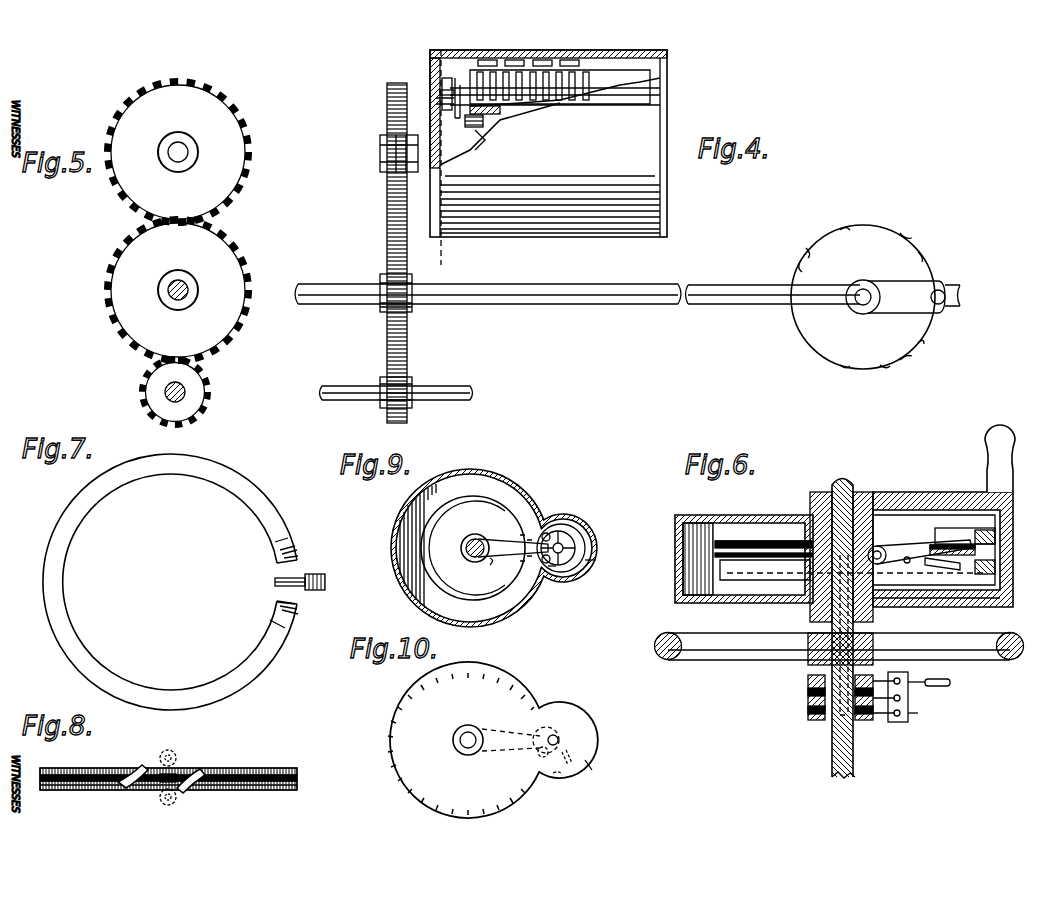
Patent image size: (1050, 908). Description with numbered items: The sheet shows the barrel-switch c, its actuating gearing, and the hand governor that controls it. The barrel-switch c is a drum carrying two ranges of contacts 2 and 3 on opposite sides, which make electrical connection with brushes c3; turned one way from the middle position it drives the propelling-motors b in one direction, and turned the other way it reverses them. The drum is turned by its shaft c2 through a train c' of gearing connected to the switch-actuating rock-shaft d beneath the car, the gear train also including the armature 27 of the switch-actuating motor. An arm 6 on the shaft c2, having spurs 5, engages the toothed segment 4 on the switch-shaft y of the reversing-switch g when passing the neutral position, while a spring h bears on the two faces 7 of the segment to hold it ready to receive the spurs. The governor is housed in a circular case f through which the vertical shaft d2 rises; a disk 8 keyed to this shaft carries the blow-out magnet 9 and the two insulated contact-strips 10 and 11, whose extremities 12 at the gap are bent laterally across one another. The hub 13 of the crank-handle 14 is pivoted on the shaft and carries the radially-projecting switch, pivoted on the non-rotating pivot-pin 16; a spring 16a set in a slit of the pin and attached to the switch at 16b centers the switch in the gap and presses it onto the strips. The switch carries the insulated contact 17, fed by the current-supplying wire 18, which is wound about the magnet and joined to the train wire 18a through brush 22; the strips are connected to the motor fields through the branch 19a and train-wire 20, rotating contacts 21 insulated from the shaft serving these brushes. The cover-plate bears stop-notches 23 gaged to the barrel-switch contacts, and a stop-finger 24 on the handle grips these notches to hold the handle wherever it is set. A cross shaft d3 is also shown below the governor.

In FIG. 4, the range of contacts 2 is at (436, 49).
In FIG. 9, the range of contacts 2 is at (473, 539).
In FIG. 9, the range of contacts 3 is at (496, 575).
In FIG. 4, the toothed segment 4 is at (440, 86).
In FIG. 9, the toothed segment 4 is at (553, 572).
In FIG. 10, the toothed segment 4 is at (538, 753).
In FIG. 9, the spurs 5 is at (514, 545).
In FIG. 9, the arm 6 is at (489, 571).
In FIG. 9, the faces 7 is at (560, 535).
In FIG. 10, the faces 7 is at (548, 740).
In FIG. 6, the disk 8 is at (1002, 598).
In FIG. 7, the blow-out magnet 9 is at (328, 582).
In FIG. 6, the blow-out magnet 9 is at (996, 567).
In FIG. 7, the contact-strip 10 is at (248, 668).
In FIG. 8, the contact-strip 10 is at (255, 768).
In FIG. 6, the contact-strip 10 is at (763, 532).
In FIG. 8, the contact-strip 11 is at (252, 790).
In FIG. 6, the contact-strip 11 is at (850, 566).
In FIG. 7, the extremity of strip 12 is at (296, 551).
In FIG. 8, the extremity of strip 12 is at (142, 765).
In FIG. 6, the hub 13 is at (813, 505).
In FIG. 4, the crank-handle 14 is at (898, 290).
In FIG. 6, the crank-handle 14 is at (910, 500).
In FIG. 6, the pivot-pin 16 is at (880, 552).
In FIG. 6, the spring 16a is at (940, 536).
In FIG. 6, the spring connection 16b is at (907, 564).
In FIG. 8, the insulated contact 17 is at (180, 770).
In FIG. 6, the insulated contact 17 is at (945, 575).
In FIG. 6, the current-supplying wire 18 is at (955, 528).
In FIG. 6, the train-circuit wire 18a is at (948, 681).
In FIG. 6, the branch 19a is at (930, 717).
In FIG. 6, the train-wire 20 is at (900, 698).
In FIG. 6, the rotating contacts 21 is at (808, 714).
In FIG. 6, the brush 22 is at (896, 722).
In FIG. 4, the stop-notches 23 is at (905, 252).
In FIG. 6, the stop-finger 24 is at (996, 536).
In FIG. 5, the armature 27 is at (186, 390).
In FIG. 4, the propelling-motors b is at (470, 151).
In FIG. 10, the propelling-motors b is at (511, 754).
In FIG. 4, the barrel-switch c is at (560, 143).
In FIG. 9, the barrel-switch c is at (494, 540).
In FIG. 10, the barrel-switch c is at (483, 740).
In FIG. 5, the train of gearing c' is at (178, 287).
In FIG. 4, the train of gearing c' is at (428, 253).
In FIG. 9, the train of gearing c' is at (500, 531).
In FIG. 5, the shaft of barrel-switch c2 is at (183, 152).
In FIG. 4, the shaft of barrel-switch c2 is at (415, 172).
In FIG. 9, the shaft of barrel-switch c2 is at (461, 552).
In FIG. 10, the shaft of barrel-switch c2 is at (458, 738).
In FIG. 4, the brushes c3 is at (503, 110).
In FIG. 5, the switch-actuating rock-shaft d is at (183, 288).
In FIG. 4, the switch-actuating rock-shaft d is at (577, 341).
In FIG. 4, the shaft d2 is at (863, 305).
In FIG. 6, the shaft d2 is at (856, 772).
In FIG. 6, the cross shaft d3 is at (718, 660).
In FIG. 4, the case f is at (800, 322).
In FIG. 6, the case f is at (744, 545).
In FIG. 4, the reversing-switch g is at (603, 80).
In FIG. 9, the reversing-switch g is at (585, 545).
In FIG. 9, the spring h is at (597, 565).
In FIG. 10, the spring h is at (596, 777).
In FIG. 4, the switch-shaft y is at (446, 84).
In FIG. 9, the switch-shaft y is at (572, 532).
In FIG. 10, the switch-shaft y is at (558, 740).